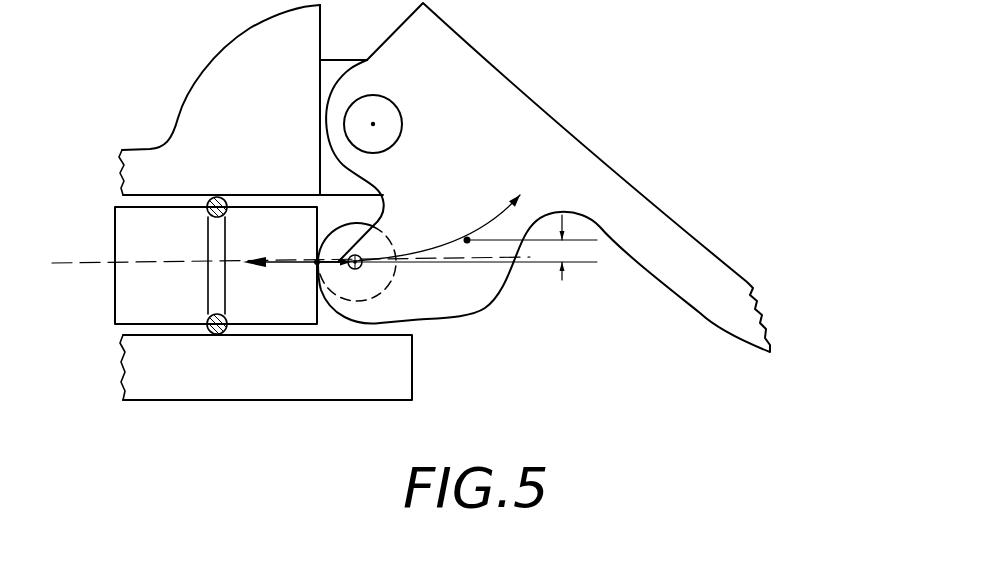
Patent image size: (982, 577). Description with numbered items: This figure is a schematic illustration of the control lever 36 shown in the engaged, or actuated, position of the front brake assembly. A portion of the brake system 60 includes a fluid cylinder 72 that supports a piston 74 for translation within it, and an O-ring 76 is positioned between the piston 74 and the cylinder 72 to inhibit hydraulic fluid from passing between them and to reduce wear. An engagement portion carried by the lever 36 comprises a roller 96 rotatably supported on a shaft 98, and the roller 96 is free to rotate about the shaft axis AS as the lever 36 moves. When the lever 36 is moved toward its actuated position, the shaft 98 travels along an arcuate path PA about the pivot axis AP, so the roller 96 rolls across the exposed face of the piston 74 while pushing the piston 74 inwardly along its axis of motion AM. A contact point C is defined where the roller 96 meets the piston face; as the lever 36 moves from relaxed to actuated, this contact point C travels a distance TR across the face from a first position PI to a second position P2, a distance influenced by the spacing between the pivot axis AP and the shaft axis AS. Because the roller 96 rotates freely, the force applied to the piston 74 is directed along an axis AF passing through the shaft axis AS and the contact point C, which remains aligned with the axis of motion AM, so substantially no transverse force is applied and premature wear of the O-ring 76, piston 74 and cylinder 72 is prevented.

The lever 36 is at (693, 240).
The brake system 60 is at (293, 400).
The fluid cylinder 72 is at (148, 329).
The piston 74 is at (160, 197).
The O-ring 76 is at (215, 335).
The roller 96 is at (335, 224).
The shaft 98 is at (362, 268).
The pivot axis AP is at (373, 124).
The shaft axis AS is at (364, 254).
The axis of motion AM is at (73, 267).
The contact point C is at (316, 258).
The second position P2 is at (345, 292).
The force axis AF is at (452, 264).
The arcuate path PA is at (500, 212).
The first position PI is at (463, 236).
The distance TR is at (562, 283).